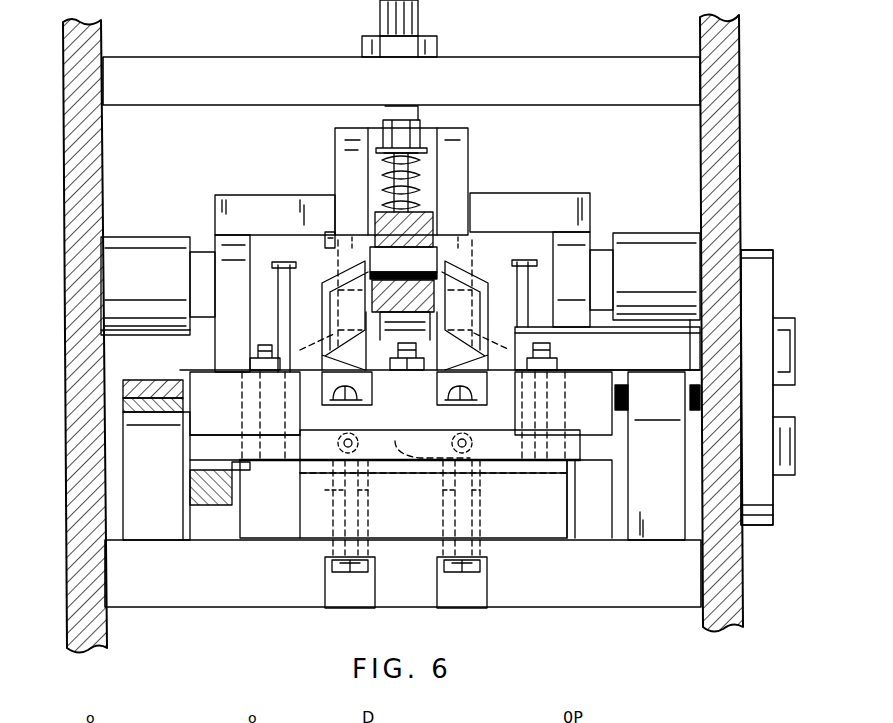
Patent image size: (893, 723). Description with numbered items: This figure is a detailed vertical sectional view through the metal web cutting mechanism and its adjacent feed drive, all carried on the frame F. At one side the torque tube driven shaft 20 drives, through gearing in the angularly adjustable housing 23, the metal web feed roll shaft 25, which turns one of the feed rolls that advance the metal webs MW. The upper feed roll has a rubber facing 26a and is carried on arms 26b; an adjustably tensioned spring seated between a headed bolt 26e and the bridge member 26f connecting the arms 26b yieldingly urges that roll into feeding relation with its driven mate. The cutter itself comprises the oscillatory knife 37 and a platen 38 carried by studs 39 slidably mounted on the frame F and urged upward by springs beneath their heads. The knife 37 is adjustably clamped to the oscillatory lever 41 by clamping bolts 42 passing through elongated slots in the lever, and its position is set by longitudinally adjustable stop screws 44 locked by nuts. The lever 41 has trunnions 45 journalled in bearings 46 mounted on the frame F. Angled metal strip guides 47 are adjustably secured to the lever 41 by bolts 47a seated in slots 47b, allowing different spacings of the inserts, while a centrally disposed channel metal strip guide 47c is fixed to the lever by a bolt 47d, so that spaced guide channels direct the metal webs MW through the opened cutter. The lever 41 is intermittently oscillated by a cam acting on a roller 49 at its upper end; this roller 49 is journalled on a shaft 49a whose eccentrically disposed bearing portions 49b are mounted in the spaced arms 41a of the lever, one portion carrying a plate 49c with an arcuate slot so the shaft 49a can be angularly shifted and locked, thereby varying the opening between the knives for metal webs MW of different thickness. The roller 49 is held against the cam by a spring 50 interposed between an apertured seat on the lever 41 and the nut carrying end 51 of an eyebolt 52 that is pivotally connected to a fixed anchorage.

The frame F is at (62, 94).
The torque tube driven shaft 20 is at (775, 316).
The housing 23 is at (755, 252).
The metal web feed roll shaft 25 is at (262, 330).
The rubber facing 26a is at (264, 236).
The arms 26b is at (215, 248).
The headed bolt 26e is at (381, 14).
The bridge member 26f is at (555, 207).
The oscillatory knife 37 is at (325, 440).
The platen 38 is at (240, 466).
The studs 39 is at (445, 575).
The oscillatory lever 41 is at (355, 190).
The spaced arms 41a is at (324, 270).
The clamping bolts 42 is at (338, 388).
The stop screws 44 is at (355, 428).
The trunnions 45 is at (150, 450).
The bearings 46 is at (182, 395).
The angled metal strip guides 47 is at (295, 466).
The bolts 47a is at (262, 350).
The slots 47b is at (243, 404).
The channel metal strip guide 47c is at (417, 498).
The bolt 47d is at (412, 350).
The roller 49 is at (430, 215).
The shaft 49a is at (430, 250).
The eccentrically disposed bearing portions 49b is at (403, 236).
The plate 49c is at (330, 233).
The spring 50 is at (380, 158).
The nut carrying end 51 is at (418, 130).
The eyebolt 52 is at (420, 170).
The metal webs MW is at (395, 441).